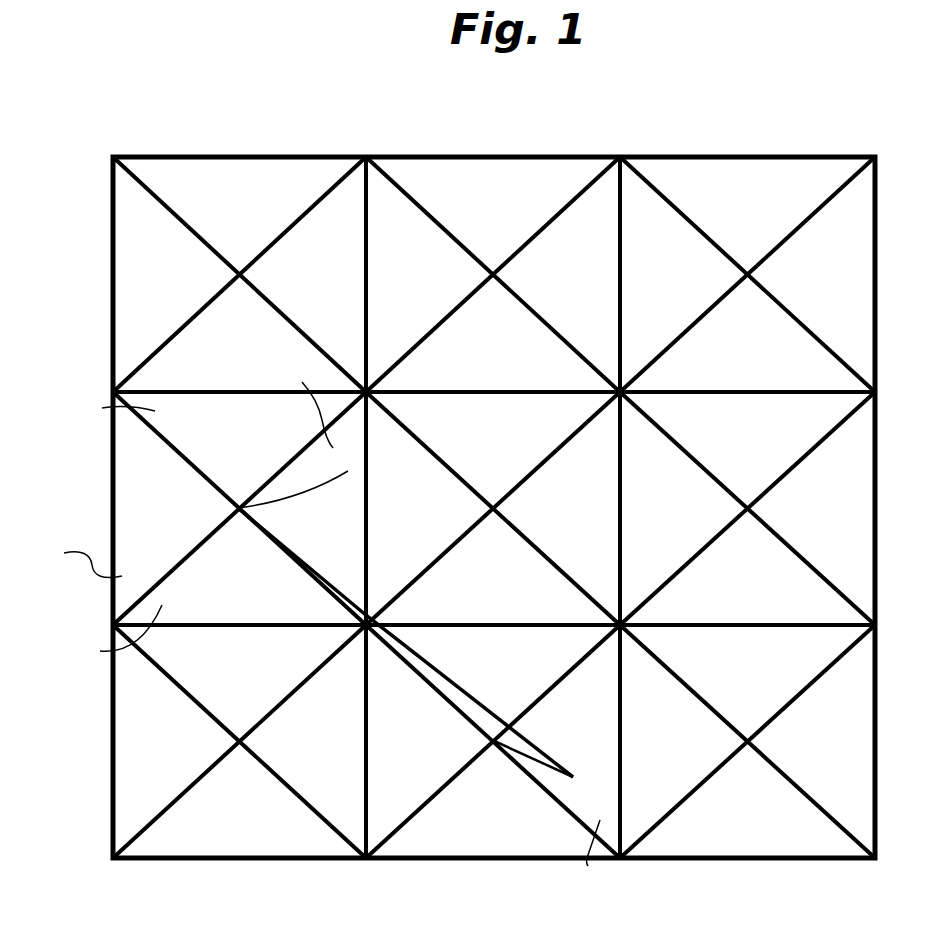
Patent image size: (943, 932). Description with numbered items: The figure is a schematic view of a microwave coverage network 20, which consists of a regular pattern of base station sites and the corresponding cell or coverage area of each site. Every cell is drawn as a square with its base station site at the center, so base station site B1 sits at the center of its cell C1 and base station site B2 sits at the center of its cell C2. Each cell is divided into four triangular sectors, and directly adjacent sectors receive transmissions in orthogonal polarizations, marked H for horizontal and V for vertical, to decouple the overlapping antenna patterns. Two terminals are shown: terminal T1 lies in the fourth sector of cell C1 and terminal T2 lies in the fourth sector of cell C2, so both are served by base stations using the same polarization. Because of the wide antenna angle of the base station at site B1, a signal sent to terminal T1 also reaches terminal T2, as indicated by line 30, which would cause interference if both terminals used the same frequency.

The microwave coverage network 20 is at (160, 146).
The line 30 is at (412, 645).
The cell C1 is at (108, 503).
The cell C2 is at (436, 860).
The base station site B1 is at (240, 506).
The terminal T1 is at (362, 466).
The base station site B2 is at (494, 722).
The terminal T2 is at (577, 768).